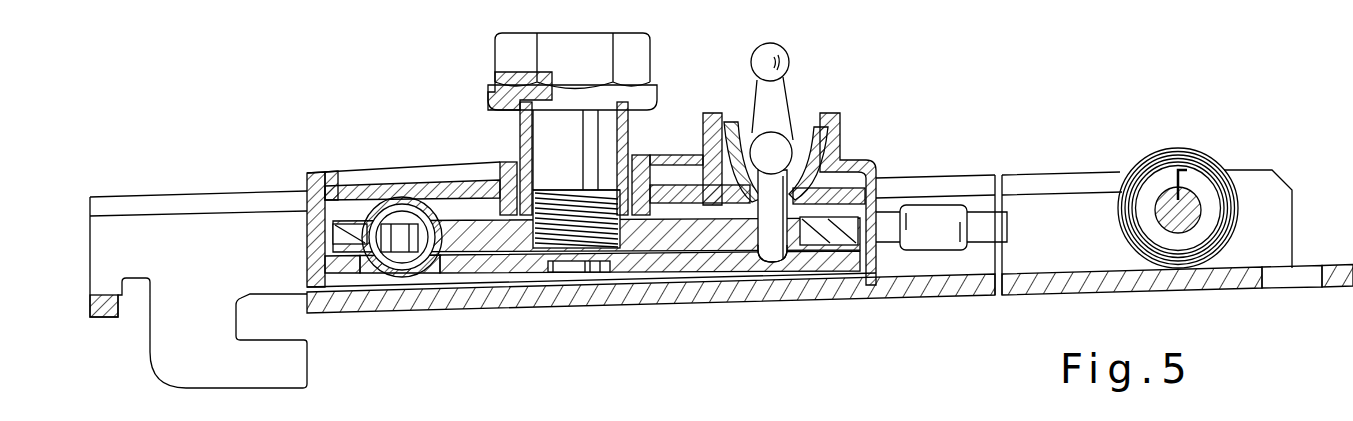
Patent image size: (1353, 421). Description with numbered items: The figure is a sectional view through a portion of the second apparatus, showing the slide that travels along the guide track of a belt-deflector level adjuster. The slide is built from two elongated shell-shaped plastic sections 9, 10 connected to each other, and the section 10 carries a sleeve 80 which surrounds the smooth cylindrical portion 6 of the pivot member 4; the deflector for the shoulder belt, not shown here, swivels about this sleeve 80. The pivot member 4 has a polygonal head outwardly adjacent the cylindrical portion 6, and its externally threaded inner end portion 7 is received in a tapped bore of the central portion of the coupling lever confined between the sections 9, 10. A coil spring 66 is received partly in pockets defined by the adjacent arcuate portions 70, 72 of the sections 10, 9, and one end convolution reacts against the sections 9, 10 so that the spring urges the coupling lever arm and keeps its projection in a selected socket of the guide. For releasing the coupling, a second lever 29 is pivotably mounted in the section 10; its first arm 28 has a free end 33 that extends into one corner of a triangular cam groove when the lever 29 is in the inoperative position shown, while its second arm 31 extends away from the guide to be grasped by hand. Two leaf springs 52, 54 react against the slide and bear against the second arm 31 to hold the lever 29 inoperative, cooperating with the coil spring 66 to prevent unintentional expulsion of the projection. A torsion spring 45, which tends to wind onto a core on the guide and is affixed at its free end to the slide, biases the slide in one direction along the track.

The pivot member 4 is at (610, 122).
The smooth cylindrical portion 6 is at (582, 151).
The externally threaded inner end portion 7 is at (557, 265).
The shell-shaped section 9 is at (675, 260).
The shell-shaped section 10 is at (332, 175).
The first arm 28 is at (817, 255).
The second lever 29 is at (777, 110).
The second arm 31 is at (783, 93).
The free end 33 is at (758, 252).
The torsion spring 45 is at (1208, 162).
The leaf spring 52 is at (840, 147).
The leaf spring 54 is at (735, 130).
The coil spring 66 is at (408, 263).
The arcuate portion 70 is at (398, 200).
The arcuate portion 72 is at (378, 283).
The sleeve 80 is at (520, 132).